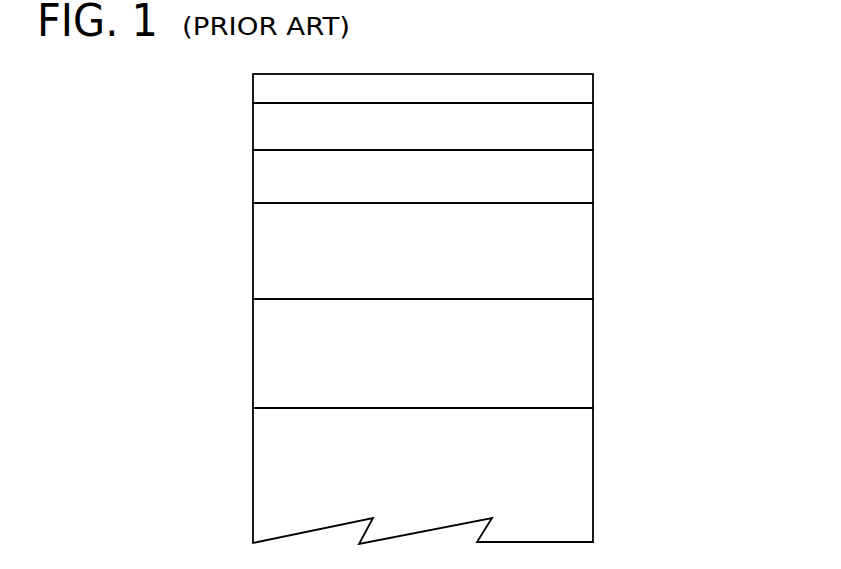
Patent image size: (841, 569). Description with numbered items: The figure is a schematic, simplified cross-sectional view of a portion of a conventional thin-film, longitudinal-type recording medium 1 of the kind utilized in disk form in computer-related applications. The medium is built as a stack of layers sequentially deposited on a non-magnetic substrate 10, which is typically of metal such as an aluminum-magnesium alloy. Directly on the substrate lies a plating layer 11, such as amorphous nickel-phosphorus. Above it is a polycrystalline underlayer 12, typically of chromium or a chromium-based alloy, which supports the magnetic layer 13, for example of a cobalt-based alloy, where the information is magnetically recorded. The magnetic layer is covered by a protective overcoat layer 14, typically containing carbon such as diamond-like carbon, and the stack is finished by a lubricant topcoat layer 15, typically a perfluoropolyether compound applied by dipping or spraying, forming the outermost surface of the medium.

The thin-film, longitudinal-type recording medium 1 is at (724, 121).
The non-magnetic substrate 10 is at (593, 479).
The plating layer 11 is at (593, 358).
The polycrystalline underlayer 12 is at (593, 258).
The magnetic layer 13 is at (593, 173).
The protective overcoat layer 14 is at (593, 125).
The lubricant topcoat layer 15 is at (593, 83).